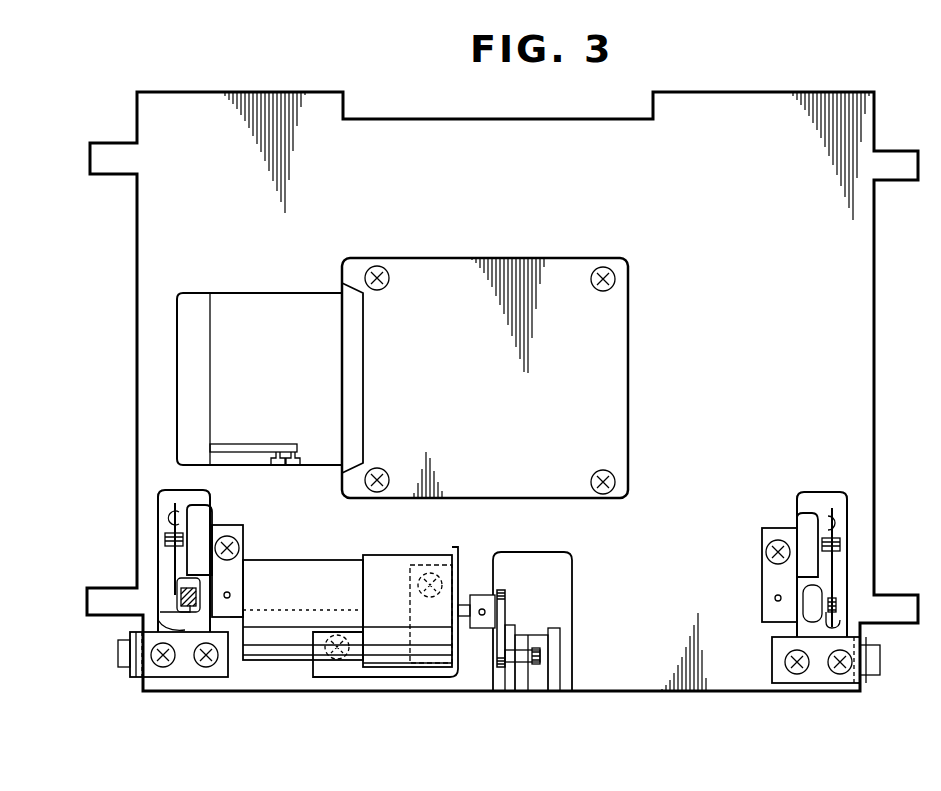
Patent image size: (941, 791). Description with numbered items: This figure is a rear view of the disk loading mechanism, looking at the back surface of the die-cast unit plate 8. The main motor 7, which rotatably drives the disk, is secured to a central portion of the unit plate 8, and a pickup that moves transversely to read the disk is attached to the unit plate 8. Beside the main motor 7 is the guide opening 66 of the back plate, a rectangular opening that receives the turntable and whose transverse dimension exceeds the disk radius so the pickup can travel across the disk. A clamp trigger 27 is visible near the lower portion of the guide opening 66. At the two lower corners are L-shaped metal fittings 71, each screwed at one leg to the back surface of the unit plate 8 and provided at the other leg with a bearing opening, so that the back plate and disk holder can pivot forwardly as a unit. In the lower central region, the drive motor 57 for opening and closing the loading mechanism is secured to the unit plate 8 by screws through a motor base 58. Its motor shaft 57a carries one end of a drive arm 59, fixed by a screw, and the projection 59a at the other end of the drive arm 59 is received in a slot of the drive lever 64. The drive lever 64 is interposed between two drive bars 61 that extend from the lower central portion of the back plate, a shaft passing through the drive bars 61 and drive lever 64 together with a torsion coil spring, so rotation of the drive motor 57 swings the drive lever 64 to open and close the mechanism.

The main motor 7 is at (613, 358).
The unit plate 8 is at (850, 328).
The clamp trigger 27 is at (272, 448).
The drive motor 57 is at (283, 650).
The motor shaft 57a is at (465, 620).
The motor base 58 is at (405, 676).
The drive arm 59 is at (502, 599).
The projection 59a is at (535, 667).
The drive bar 61 is at (507, 683).
The drive lever 64 is at (522, 630).
The guide opening 66 is at (278, 302).
The L-shaped metal fitting 71 is at (186, 670).